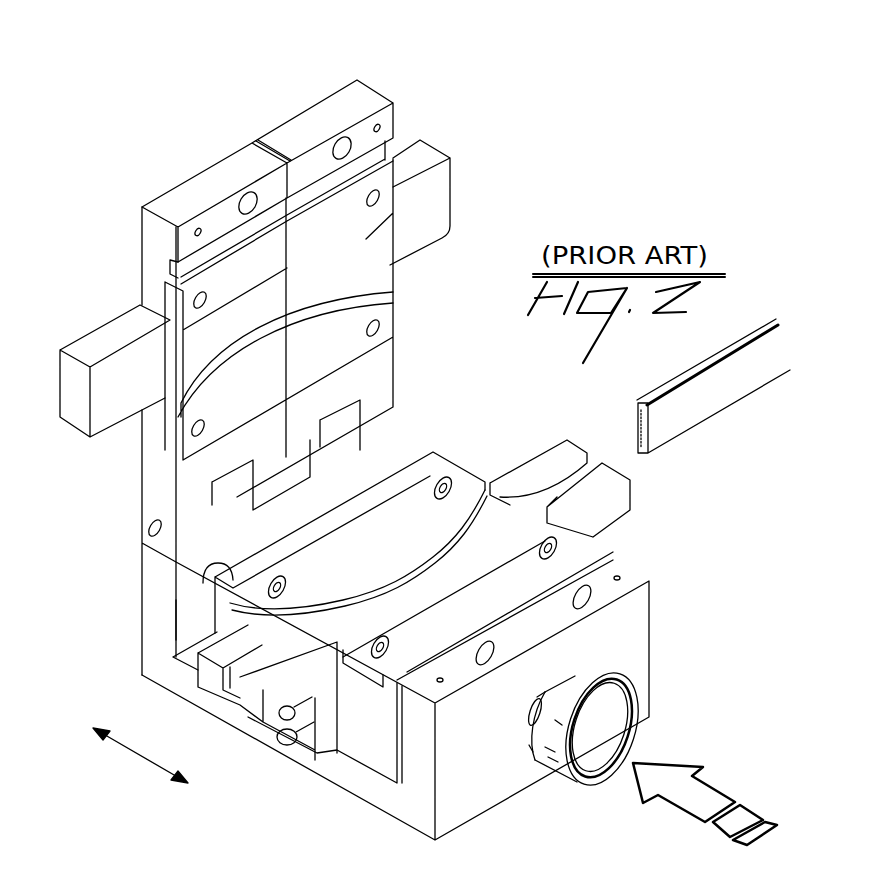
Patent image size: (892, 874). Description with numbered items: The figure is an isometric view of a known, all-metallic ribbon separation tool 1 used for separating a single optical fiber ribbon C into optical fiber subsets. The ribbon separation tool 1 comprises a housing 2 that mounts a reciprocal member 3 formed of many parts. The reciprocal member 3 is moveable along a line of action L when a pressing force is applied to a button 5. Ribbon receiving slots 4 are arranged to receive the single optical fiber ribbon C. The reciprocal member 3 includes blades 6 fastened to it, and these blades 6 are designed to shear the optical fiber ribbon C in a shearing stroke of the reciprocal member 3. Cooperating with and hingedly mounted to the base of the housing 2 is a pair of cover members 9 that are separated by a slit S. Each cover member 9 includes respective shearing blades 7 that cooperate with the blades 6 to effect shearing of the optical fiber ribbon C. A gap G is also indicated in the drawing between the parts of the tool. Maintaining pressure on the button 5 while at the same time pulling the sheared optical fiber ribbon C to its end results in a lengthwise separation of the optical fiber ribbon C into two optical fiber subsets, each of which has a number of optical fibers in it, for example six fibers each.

The ribbon separation tool 1 is at (492, 202).
The housing 2 is at (155, 587).
The reciprocal member 3 is at (373, 727).
The ribbon receiving slots 4 is at (230, 693).
The button 5 is at (625, 727).
The blades 6 is at (443, 470).
The shearing blades 7 is at (385, 300).
The cover members 9 is at (160, 173).
The slit S is at (270, 147).
The gap G is at (190, 610).
The line of action L is at (218, 678).
The optical fiber ribbon C is at (742, 340).